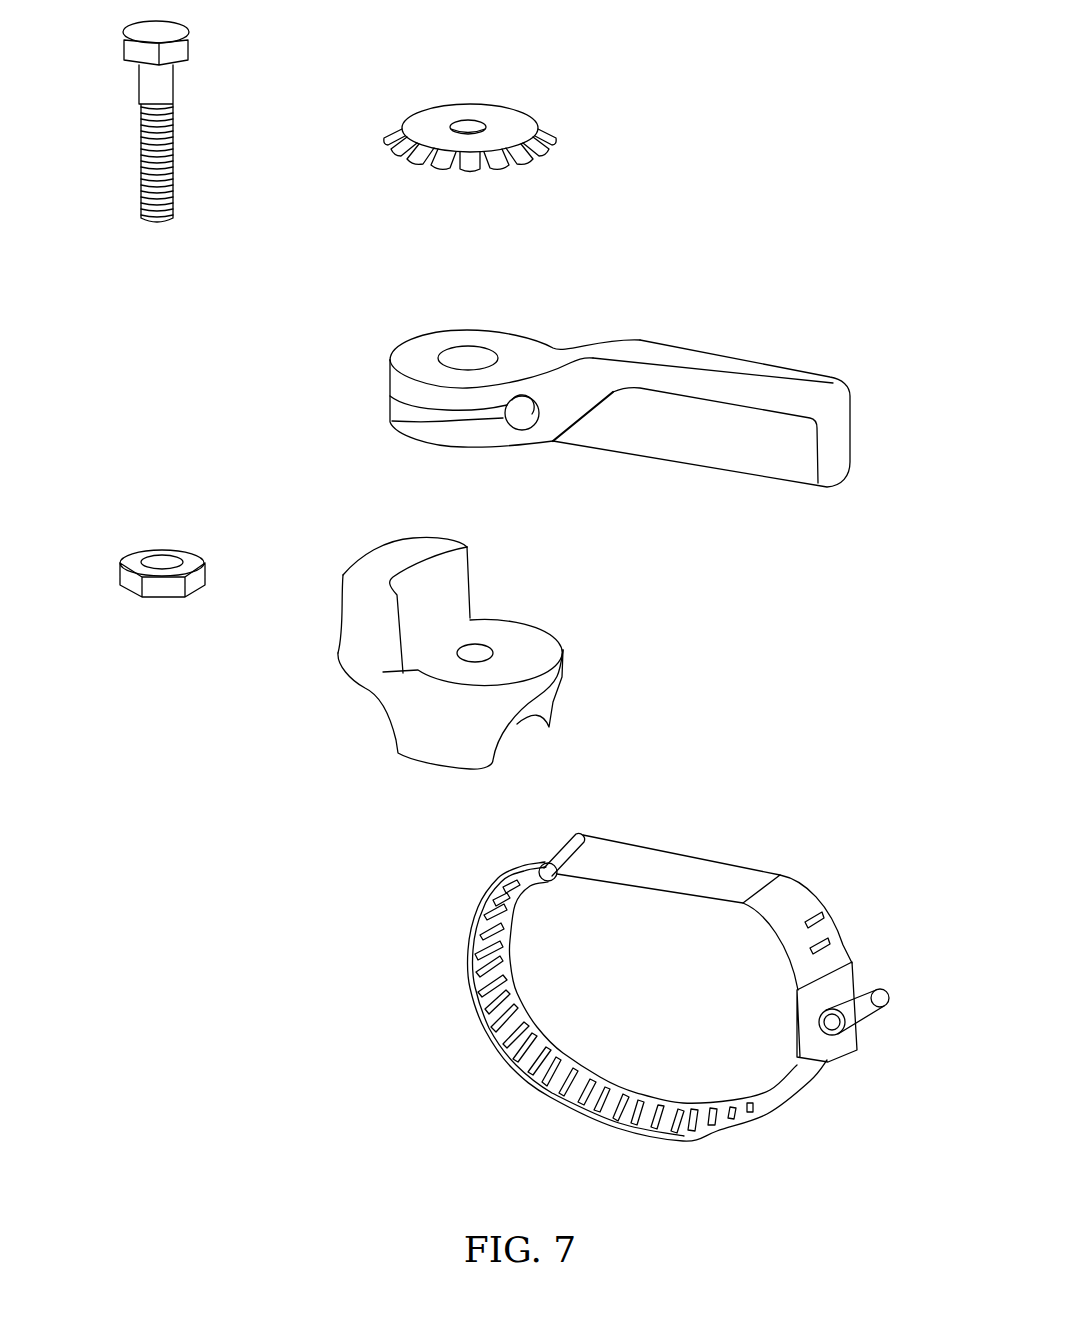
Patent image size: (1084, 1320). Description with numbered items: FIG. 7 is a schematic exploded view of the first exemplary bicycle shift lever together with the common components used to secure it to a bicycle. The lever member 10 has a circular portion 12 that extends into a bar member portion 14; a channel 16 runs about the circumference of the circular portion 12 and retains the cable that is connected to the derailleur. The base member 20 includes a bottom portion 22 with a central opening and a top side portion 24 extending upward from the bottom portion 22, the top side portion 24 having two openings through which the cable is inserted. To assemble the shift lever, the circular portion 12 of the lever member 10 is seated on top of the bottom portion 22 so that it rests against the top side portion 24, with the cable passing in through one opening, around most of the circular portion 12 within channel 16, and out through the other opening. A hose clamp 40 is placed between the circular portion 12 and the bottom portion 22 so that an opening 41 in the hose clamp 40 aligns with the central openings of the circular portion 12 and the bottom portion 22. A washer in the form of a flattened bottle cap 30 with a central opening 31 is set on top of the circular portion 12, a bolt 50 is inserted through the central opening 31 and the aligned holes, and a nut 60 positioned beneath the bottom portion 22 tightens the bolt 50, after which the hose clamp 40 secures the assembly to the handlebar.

The lever member 10 is at (577, 422).
The circular portion 12 is at (488, 438).
The bar member portion 14 is at (768, 452).
The channel 16 is at (407, 403).
The base member 20 is at (409, 688).
The bottom portion 22 is at (417, 740).
The top side portion 24 is at (357, 603).
The flattened bottle cap 30 is at (530, 104).
The central opening 31 is at (472, 125).
The hose clamp 40 is at (678, 953).
The opening 41 is at (587, 833).
The bolt 50 is at (186, 49).
The nut 60 is at (147, 548).